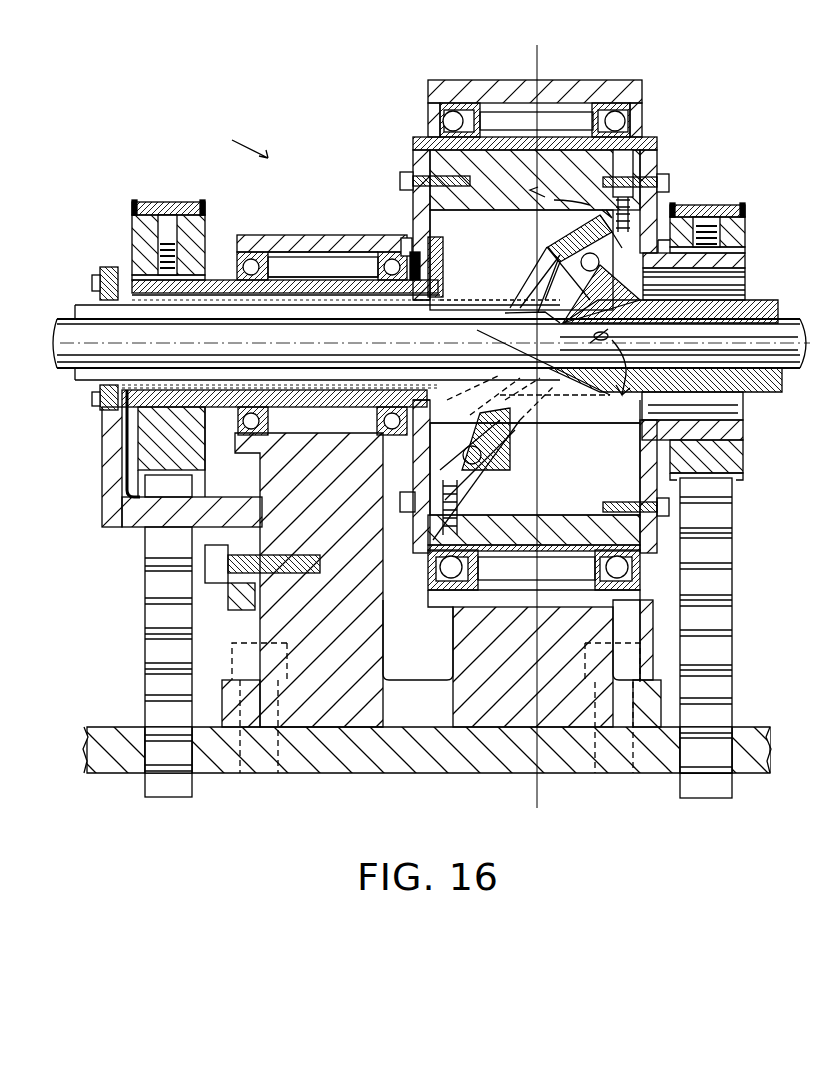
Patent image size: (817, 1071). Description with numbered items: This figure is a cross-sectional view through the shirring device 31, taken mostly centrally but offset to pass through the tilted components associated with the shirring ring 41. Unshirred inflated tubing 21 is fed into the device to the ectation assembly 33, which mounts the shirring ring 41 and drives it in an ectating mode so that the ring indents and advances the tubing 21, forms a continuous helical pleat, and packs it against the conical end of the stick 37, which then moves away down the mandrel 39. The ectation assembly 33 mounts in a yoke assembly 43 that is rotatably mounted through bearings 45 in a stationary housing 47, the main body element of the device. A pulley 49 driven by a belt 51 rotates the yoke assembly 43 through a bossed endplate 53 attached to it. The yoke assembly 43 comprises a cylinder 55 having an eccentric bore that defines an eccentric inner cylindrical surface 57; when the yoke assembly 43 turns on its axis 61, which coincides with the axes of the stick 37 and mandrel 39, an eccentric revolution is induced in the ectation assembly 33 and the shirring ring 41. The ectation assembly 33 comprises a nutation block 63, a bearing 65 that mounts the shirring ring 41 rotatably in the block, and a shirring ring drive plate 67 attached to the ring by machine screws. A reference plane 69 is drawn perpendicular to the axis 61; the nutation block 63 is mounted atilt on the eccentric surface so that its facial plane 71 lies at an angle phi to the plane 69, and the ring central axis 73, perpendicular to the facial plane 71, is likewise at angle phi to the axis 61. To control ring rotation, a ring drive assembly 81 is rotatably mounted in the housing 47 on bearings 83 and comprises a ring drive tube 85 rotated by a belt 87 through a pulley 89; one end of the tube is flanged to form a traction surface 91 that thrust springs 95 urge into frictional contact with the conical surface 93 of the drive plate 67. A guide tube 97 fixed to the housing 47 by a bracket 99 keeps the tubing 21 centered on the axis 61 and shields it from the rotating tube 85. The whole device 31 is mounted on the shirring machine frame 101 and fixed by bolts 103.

The tubing 21 is at (78, 372).
The shirring device 31 is at (245, 137).
The ectation assembly 33 is at (616, 478).
The stick 37 is at (760, 393).
The mandrel 39 is at (75, 306).
The shirring ring 41 is at (566, 282).
The yoke assembly 43 is at (699, 150).
The bearings 45 is at (445, 121).
The stationary housing 47 is at (478, 92).
The pulley 49 is at (742, 230).
The belt 51 is at (700, 214).
The bossed endplate 53 is at (650, 162).
The cylinder 55 is at (432, 160).
The eccentric inner cylindrical surface 57 is at (503, 207).
The axis 61 is at (650, 342).
The nutation block 63 is at (586, 252).
The bearing 65 is at (537, 400).
The shirring ring drive plate 67 is at (552, 250).
The plane 69 is at (540, 66).
The facial plane 71 is at (576, 225).
The ring central axis 73 is at (625, 402).
The ring drive assembly 81 is at (305, 220).
The bearings 83 is at (392, 256).
The ring drive tube 85 is at (322, 265).
The belt 87 is at (172, 212).
The pulley 89 is at (134, 236).
The traction surface 91 is at (440, 262).
The conical surface 93 is at (540, 260).
The thrust springs 95 is at (440, 248).
The guide tube 97 is at (448, 298).
The bracket 99 is at (104, 440).
The shirring machine frame 101 is at (352, 770).
The bolts 103 is at (246, 652).